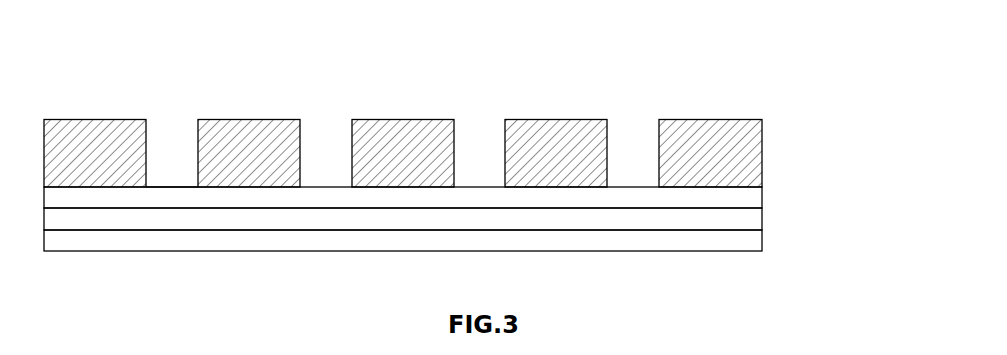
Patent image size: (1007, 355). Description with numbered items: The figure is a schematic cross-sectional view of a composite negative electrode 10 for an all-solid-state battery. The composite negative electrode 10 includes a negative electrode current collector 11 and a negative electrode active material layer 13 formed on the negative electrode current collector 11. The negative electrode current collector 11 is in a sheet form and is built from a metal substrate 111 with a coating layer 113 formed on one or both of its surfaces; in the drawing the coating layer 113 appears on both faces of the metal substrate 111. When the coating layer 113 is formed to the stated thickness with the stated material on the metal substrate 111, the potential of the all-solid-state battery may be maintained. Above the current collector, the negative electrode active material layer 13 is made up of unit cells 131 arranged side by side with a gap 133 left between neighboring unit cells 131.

The composite negative electrode 10 is at (502, 152).
The negative electrode current collector 11 is at (483, 223).
The metal substrate 111 is at (762, 218).
The coating layer 113 is at (762, 198).
The negative electrode active material layer 13 is at (451, 103).
The unit cell 131 is at (93, 119).
The gap 133 is at (172, 99).